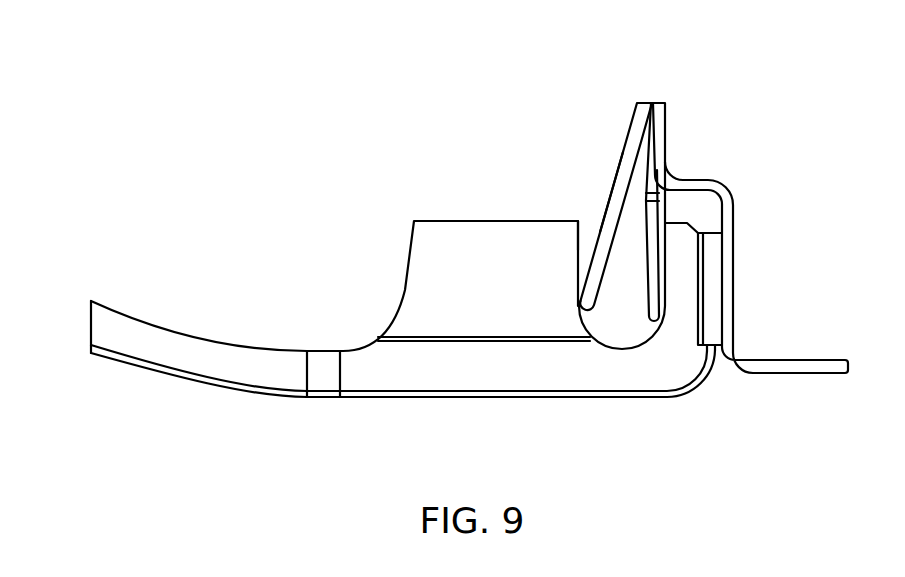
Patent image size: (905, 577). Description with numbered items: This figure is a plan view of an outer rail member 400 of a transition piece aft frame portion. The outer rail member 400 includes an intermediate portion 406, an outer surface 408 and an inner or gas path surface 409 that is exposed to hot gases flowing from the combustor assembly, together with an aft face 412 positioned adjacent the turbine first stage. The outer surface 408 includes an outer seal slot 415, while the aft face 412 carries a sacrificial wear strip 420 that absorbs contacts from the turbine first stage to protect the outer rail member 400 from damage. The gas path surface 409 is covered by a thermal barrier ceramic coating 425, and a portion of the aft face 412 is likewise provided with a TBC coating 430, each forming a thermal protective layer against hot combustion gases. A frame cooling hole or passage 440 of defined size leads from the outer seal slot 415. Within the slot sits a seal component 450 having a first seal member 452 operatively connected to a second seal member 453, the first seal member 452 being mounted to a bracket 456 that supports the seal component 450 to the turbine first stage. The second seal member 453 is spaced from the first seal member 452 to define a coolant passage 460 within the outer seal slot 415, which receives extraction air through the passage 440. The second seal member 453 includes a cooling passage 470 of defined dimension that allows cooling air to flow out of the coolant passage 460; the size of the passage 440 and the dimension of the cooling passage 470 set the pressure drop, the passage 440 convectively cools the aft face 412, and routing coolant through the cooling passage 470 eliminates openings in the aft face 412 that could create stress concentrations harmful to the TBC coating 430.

The outer rail member 400 is at (460, 185).
The intermediate portion 406 is at (527, 235).
The outer surface 408 is at (547, 220).
The gas path surface 409 is at (370, 392).
The aft face 412 is at (702, 288).
The outer seal slot 415 is at (585, 220).
The sacrificial wear strip 420 is at (713, 245).
The thermal barrier ceramic (TBC) coating 425 is at (568, 392).
The TBC coating 430 is at (712, 358).
The frame cooling hole or passage 440 is at (427, 335).
The seal component 450 is at (623, 92).
The first seal member 452 is at (668, 210).
The second seal member 453 is at (610, 165).
The bracket 456 is at (740, 200).
The coolant passage 460 is at (622, 297).
The cooling passage 470 is at (657, 200).